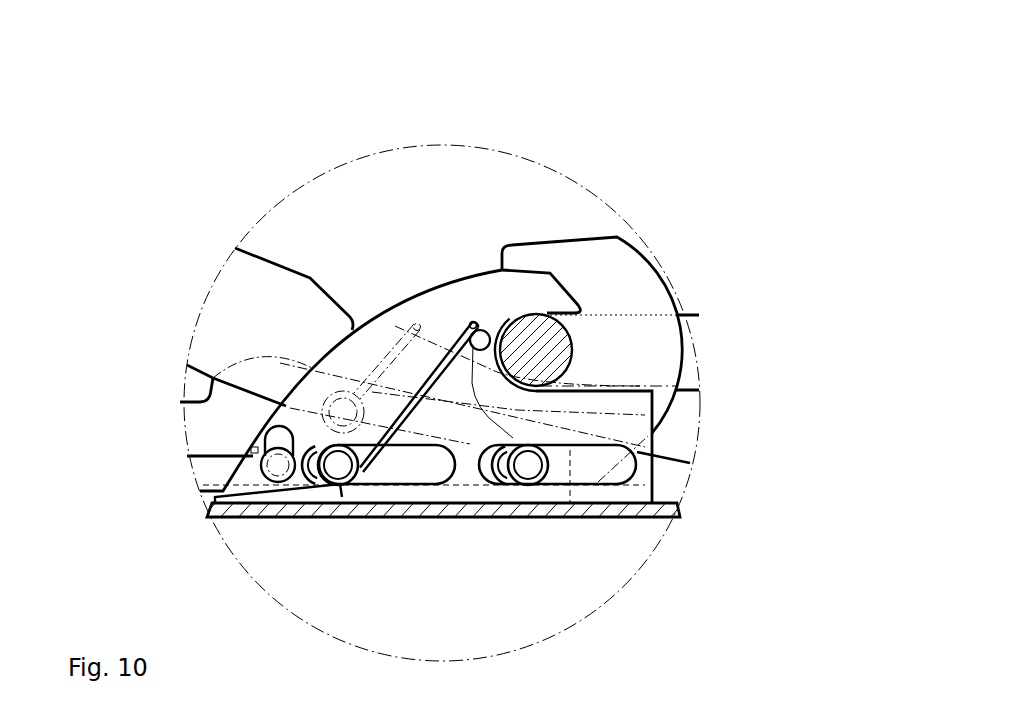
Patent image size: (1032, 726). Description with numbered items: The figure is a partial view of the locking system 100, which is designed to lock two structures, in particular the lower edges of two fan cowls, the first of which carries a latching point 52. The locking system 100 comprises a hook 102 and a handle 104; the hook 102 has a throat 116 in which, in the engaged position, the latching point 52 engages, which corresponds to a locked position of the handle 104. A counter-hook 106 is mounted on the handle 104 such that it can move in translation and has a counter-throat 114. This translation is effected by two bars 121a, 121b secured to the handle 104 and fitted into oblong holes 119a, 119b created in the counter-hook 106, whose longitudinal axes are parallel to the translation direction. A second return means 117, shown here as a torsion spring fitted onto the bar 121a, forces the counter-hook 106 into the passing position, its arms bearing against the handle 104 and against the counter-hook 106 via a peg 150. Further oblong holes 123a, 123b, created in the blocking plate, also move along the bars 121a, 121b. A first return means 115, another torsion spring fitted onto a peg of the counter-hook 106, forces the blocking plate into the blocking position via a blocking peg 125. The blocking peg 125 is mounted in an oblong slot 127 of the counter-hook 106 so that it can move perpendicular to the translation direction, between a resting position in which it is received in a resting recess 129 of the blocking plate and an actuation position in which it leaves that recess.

The locking system 100 is at (637, 127).
The hook 102 is at (583, 257).
The handle 104 is at (314, 512).
The counter-hook 106 is at (427, 297).
The counter-throat 114 is at (474, 322).
The first return means 115 is at (390, 333).
The throat 116 is at (573, 340).
The second return means 117 is at (455, 330).
The oblong hole 119a is at (282, 487).
The oblong hole 119b is at (674, 504).
The bar 121a is at (348, 476).
The bar 121b is at (541, 472).
The oblong hole 123a is at (411, 472).
The oblong hole 123b is at (493, 483).
The blocking peg 125 is at (213, 516).
The oblong slot 127 is at (290, 400).
The resting recess 129 is at (258, 476).
The peg 150 is at (560, 412).
The latching point 52 is at (670, 343).